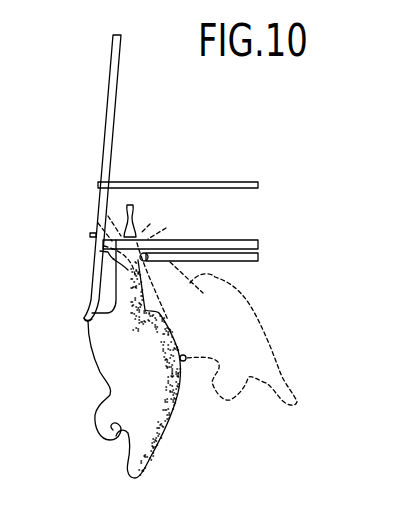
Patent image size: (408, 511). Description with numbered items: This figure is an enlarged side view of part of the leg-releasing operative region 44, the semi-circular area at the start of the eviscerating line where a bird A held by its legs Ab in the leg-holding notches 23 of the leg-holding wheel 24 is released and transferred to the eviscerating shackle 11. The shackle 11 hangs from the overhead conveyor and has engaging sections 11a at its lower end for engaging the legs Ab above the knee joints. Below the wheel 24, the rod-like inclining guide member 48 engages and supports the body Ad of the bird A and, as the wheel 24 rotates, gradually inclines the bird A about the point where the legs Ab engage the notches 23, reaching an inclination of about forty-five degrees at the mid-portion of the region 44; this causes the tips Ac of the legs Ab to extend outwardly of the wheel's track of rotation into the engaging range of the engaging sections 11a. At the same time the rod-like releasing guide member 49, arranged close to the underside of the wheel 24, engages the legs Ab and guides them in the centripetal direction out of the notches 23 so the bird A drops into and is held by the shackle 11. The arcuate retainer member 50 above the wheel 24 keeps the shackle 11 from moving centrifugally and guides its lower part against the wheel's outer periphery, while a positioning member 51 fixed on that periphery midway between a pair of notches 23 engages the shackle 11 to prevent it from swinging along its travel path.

The eviscerating shackle 11 is at (108, 96).
The engaging section 11a is at (85, 319).
The retainer member 50 is at (190, 182).
The leg-holding wheel 24 is at (237, 240).
The releasing guide member 49 is at (250, 261).
The leg-holding notch 23 is at (144, 230).
The positioning member 51 is at (91, 235).
The leg-releasing operative region 44 is at (92, 242).
The inclining guide member 48 is at (184, 361).
The bird A is at (103, 378).
The legs Ab is at (113, 259).
The tips of the legs Ac is at (102, 227).
The body of the bird Ad is at (161, 418).